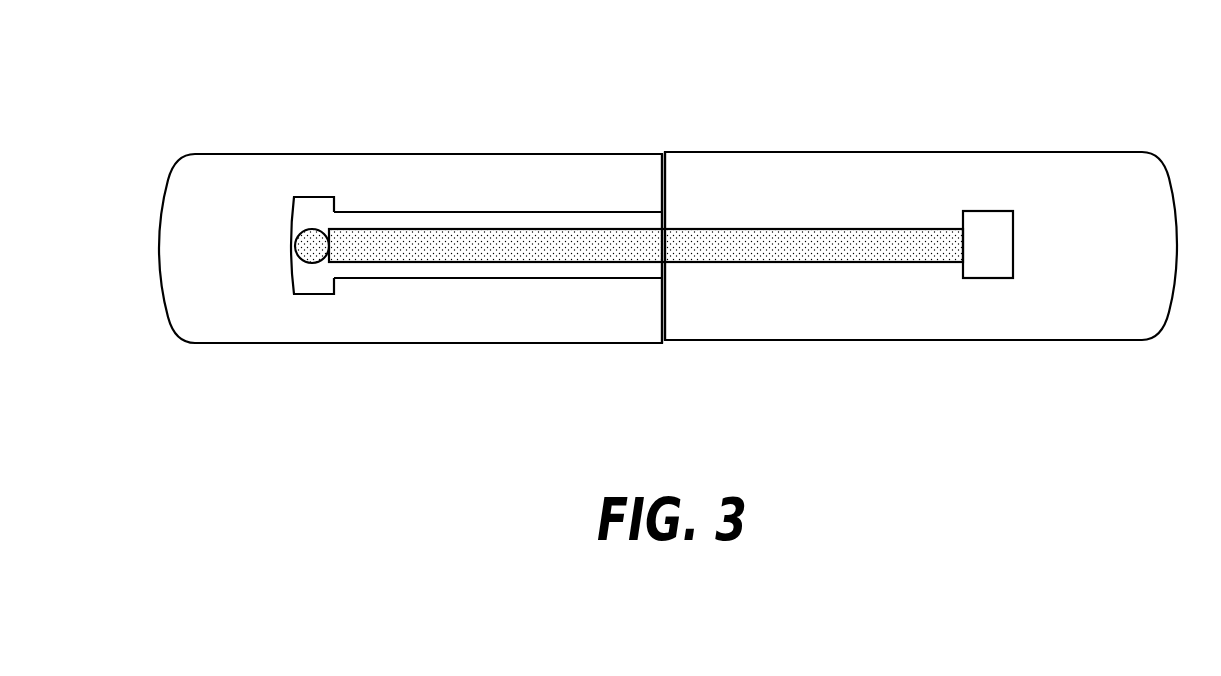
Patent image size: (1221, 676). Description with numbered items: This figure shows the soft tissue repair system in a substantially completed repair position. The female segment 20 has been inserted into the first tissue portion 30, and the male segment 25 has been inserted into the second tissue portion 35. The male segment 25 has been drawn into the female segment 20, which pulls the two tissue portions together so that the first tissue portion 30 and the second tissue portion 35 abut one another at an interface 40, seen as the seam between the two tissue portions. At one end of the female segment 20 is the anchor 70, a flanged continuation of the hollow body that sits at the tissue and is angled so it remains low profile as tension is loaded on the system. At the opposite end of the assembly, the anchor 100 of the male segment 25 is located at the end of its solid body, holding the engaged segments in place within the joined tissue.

The female segment 20 is at (446, 212).
The male segment 25 is at (824, 229).
The first tissue portion 30 is at (229, 153).
The second tissue portion 35 is at (1104, 152).
The interface 40 is at (664, 151).
The anchor 70 is at (313, 284).
The anchor 100 is at (992, 279).